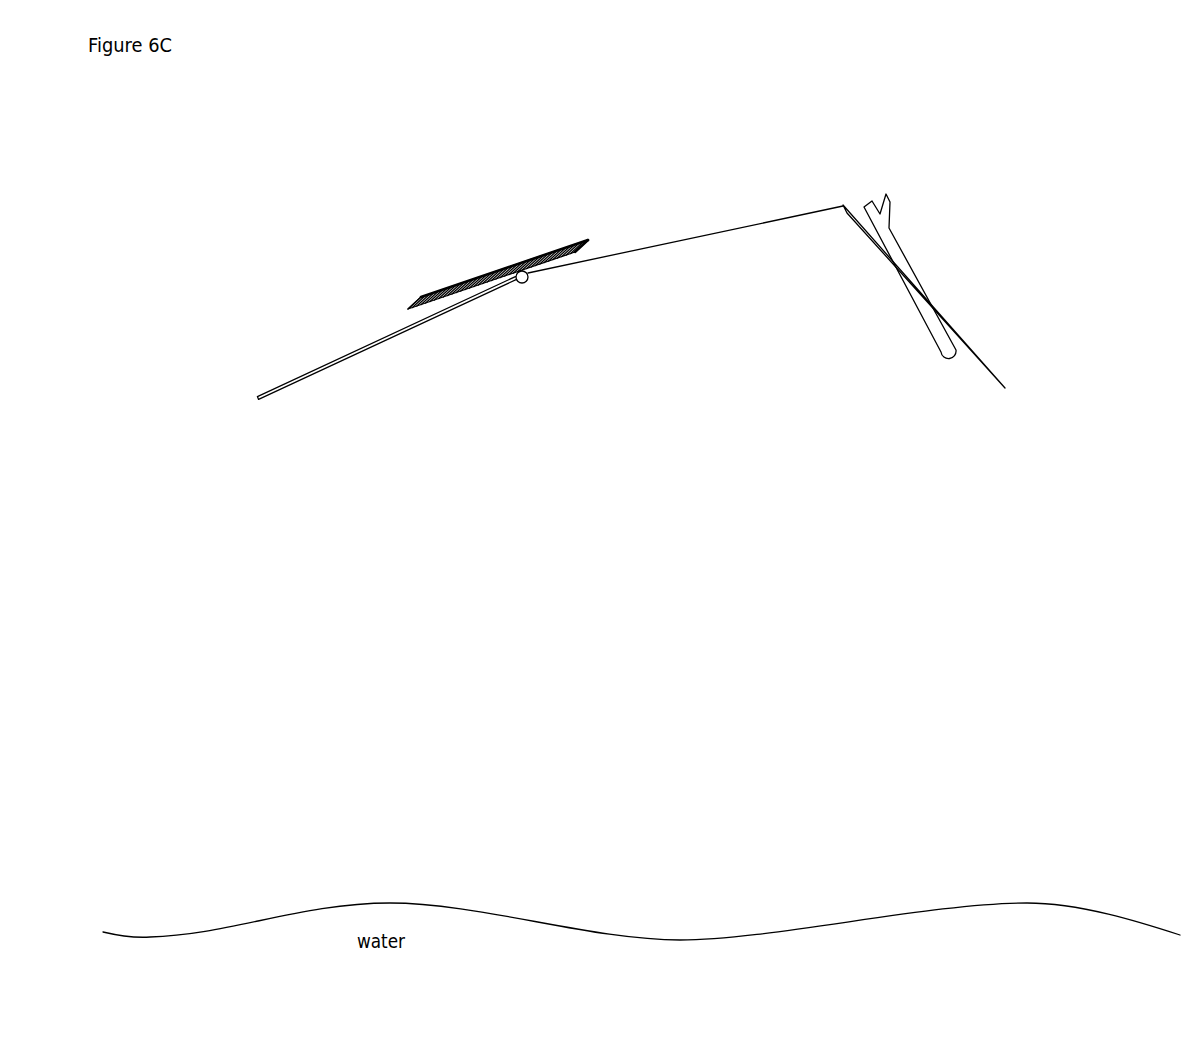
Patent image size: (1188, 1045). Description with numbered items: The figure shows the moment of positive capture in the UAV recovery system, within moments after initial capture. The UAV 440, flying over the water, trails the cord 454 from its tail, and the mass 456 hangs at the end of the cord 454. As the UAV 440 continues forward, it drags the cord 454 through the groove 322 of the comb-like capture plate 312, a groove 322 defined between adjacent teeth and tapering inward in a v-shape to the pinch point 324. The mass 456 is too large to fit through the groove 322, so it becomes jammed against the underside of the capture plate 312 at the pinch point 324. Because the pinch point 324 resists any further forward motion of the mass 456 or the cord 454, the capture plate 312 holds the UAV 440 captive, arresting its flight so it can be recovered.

The capture plate 312 is at (525, 204).
The groove 322 is at (512, 260).
The pinch point 324 is at (527, 272).
The mass 456 is at (518, 284).
The cord 454 is at (752, 240).
The UAV 440 is at (925, 277).